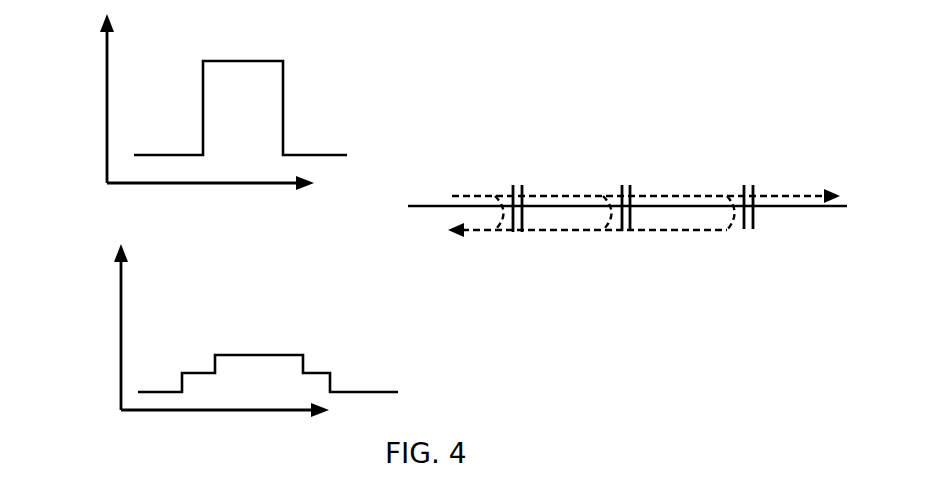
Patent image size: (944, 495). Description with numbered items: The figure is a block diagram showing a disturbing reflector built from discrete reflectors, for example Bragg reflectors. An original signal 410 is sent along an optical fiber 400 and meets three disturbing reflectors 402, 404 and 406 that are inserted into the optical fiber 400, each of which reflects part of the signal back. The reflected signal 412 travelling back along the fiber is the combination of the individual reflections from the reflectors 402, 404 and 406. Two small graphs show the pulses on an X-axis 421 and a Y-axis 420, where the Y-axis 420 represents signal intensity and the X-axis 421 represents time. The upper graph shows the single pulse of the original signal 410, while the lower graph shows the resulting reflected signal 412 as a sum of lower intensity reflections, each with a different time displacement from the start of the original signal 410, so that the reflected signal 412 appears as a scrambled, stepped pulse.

The optical fiber 400 is at (435, 208).
The disturbing reflector 402 is at (513, 181).
The disturbing reflector 404 is at (620, 181).
The disturbing reflector 406 is at (743, 181).
The original signal 410 is at (313, 154).
The reflected signal 412 is at (140, 391).
The Y-axis 420 is at (107, 107).
The X-axis 421 is at (243, 184).